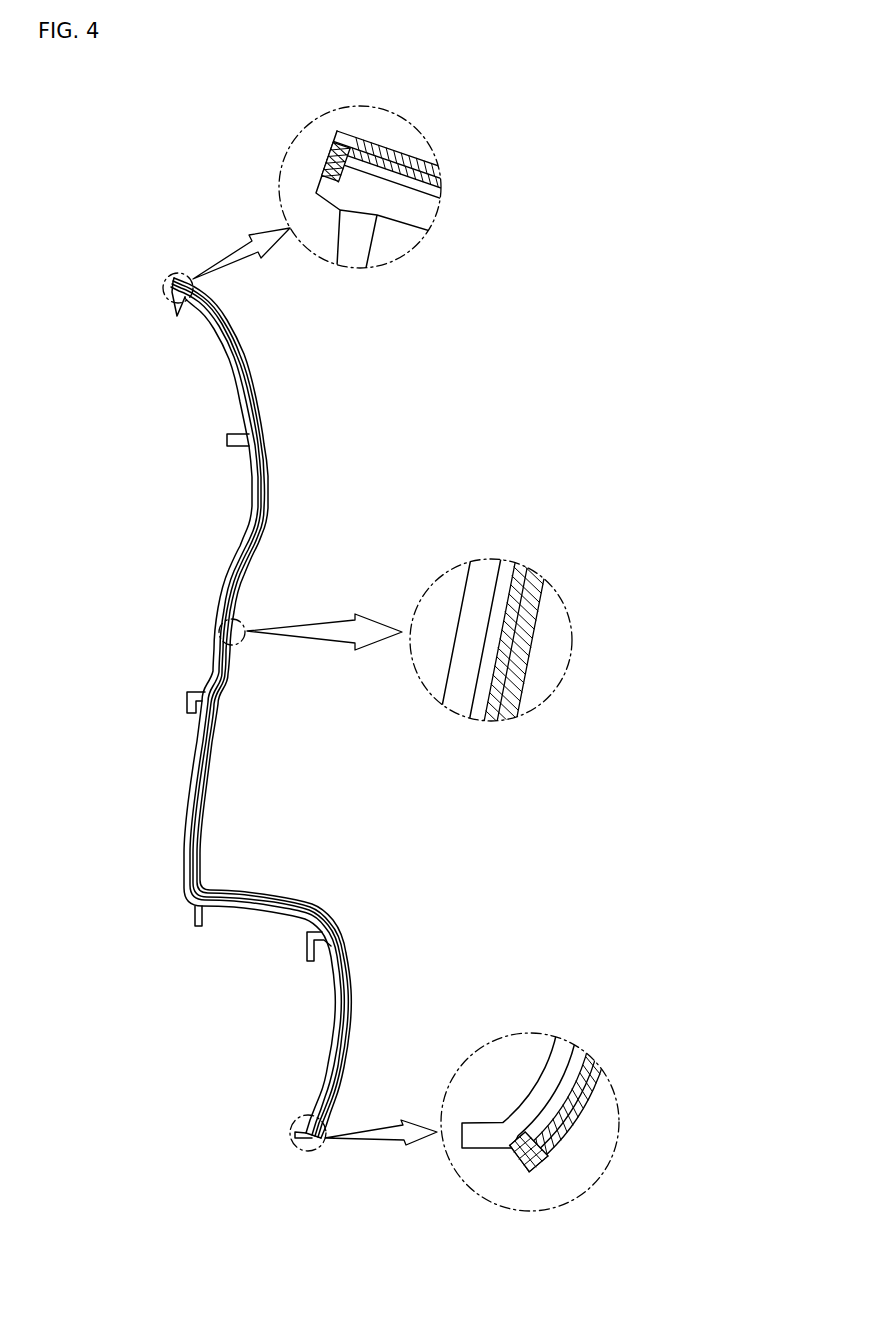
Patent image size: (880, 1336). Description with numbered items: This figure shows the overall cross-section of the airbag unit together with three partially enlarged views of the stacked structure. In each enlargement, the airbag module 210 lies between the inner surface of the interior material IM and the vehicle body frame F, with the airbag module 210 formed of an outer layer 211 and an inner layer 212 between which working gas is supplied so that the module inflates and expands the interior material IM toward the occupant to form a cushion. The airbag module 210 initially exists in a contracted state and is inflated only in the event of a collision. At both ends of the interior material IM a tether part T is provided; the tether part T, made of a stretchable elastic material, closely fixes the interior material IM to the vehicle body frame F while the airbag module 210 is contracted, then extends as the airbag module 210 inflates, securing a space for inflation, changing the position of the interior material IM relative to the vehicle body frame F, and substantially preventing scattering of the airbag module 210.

The airbag module 210 is at (516, 109).
The outer layer 211 is at (377, 156).
The inner layer 212 is at (388, 177).
The tether part T is at (318, 152).
The interior material IM is at (438, 177).
The vehicle body frame F is at (423, 222).